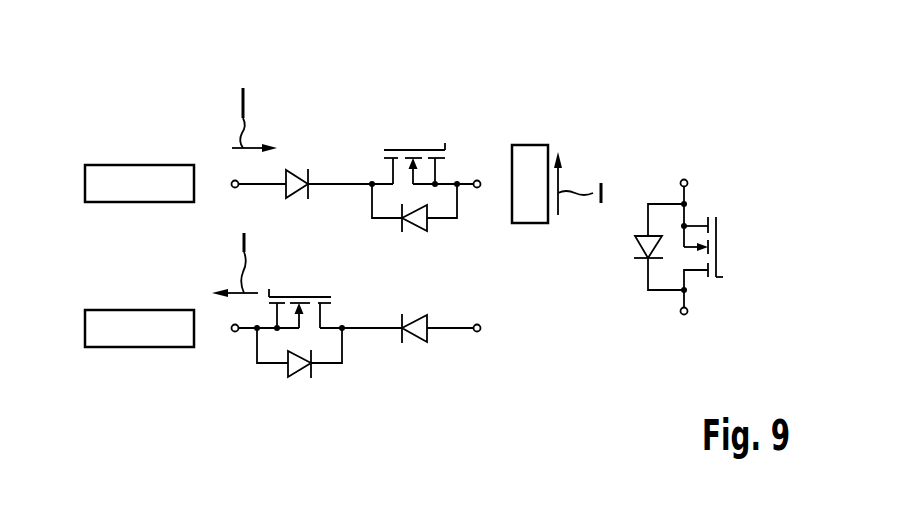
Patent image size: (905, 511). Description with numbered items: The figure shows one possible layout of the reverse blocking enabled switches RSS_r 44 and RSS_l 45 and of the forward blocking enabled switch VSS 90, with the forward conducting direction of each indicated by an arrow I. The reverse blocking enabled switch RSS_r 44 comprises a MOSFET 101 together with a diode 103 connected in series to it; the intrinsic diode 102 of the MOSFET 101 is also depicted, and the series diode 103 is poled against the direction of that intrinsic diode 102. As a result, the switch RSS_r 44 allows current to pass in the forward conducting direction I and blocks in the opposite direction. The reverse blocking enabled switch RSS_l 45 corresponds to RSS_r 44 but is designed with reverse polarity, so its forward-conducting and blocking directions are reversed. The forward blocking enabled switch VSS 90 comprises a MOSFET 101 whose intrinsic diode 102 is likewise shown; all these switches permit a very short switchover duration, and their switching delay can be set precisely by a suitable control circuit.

The reverse blocking enabled switch RSS_r 44 is at (140, 163).
The reverse blocking enabled switch RSS_l 45 is at (140, 348).
The forward blocking enabled switch VSS 90 is at (527, 145).
The MOSFET 101 is at (413, 150).
The intrinsic diode 102 is at (413, 232).
The diode 103 is at (300, 168).